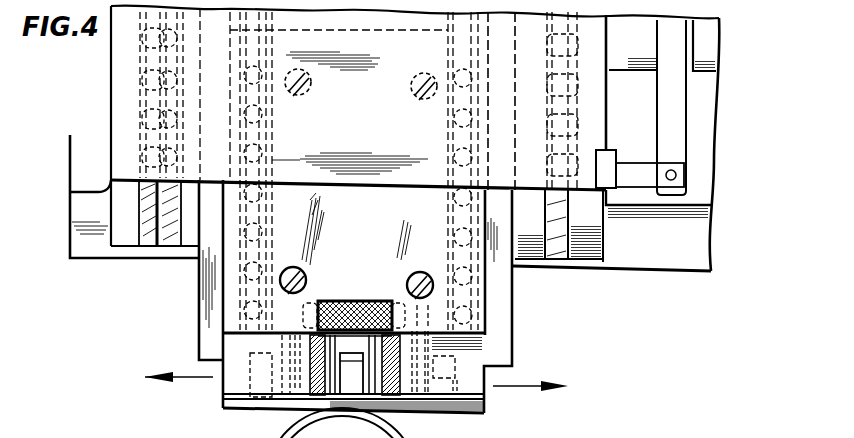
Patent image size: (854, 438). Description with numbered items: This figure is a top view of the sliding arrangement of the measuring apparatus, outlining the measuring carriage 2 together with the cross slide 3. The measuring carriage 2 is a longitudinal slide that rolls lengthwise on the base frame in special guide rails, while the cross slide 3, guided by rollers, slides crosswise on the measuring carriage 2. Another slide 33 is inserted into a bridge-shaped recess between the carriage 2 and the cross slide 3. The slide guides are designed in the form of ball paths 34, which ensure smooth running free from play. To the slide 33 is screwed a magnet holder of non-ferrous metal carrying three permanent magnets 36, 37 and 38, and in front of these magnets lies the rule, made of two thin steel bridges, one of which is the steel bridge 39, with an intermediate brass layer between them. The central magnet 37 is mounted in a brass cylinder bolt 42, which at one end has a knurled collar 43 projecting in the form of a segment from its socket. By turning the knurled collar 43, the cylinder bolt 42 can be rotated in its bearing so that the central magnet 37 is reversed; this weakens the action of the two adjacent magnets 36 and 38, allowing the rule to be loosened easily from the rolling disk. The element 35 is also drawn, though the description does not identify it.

The measuring carriage 2 is at (103, 249).
The cross slide 3 is at (126, 96).
The slide 33 is at (240, 310).
The ball paths 34 is at (268, 146).
The housing 35 is at (471, 383).
The permanent magnet 36 is at (262, 377).
The central magnet 37 is at (348, 381).
The permanent magnet 38 is at (457, 409).
The steel bridge 39 is at (428, 392).
The cylinder bolt 42 is at (352, 312).
The knurled collar 43 is at (332, 301).